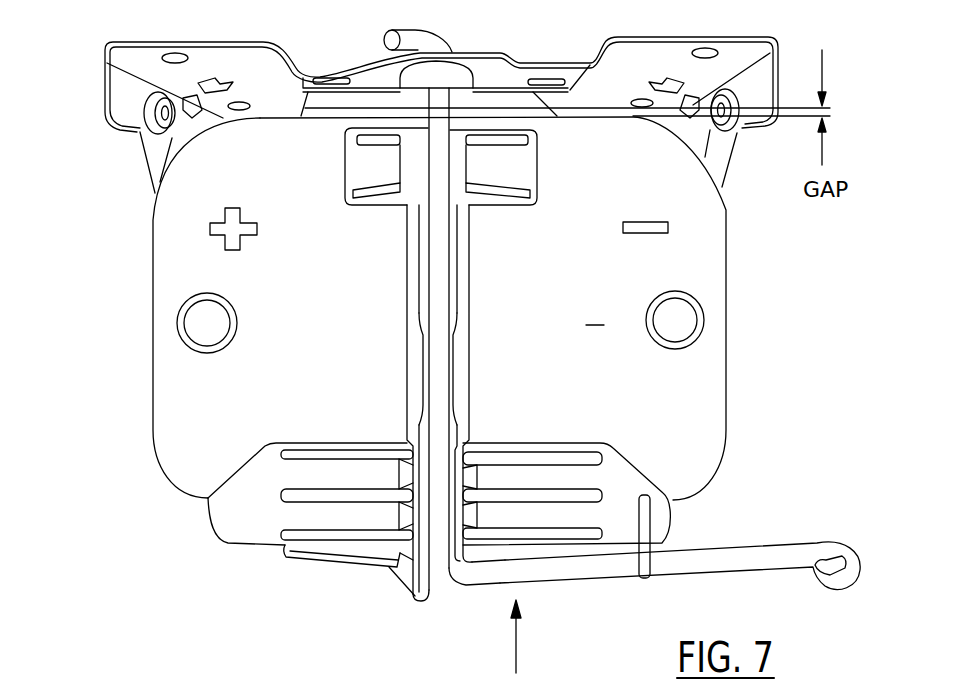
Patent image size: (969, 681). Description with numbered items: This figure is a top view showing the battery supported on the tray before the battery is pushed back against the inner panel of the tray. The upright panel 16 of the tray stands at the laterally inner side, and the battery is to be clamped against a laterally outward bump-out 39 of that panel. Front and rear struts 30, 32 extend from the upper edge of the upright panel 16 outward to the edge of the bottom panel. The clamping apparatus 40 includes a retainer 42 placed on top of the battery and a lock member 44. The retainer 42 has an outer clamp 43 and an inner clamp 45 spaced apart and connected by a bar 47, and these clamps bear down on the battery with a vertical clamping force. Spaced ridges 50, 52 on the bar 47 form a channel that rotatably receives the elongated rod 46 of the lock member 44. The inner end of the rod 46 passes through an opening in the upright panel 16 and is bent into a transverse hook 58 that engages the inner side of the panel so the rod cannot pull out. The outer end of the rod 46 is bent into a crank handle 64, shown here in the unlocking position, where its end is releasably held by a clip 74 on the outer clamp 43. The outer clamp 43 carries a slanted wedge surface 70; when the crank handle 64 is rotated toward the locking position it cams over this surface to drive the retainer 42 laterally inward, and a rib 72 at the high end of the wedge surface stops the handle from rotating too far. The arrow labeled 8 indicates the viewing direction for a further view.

The upright panel 16 is at (514, 74).
The transverse hook 58 is at (390, 31).
The bump-out 39 is at (300, 167).
The inner clamp 45 is at (525, 165).
The front strut 30 is at (162, 158).
The rear strut 32 is at (725, 153).
The clamping apparatus 40 is at (378, 262).
The rod 46 is at (437, 227).
The bar 47 is at (410, 313).
The ridge 50 is at (417, 373).
The retainer 42 is at (500, 340).
The ridge 52 is at (467, 388).
The outer clamp 43 is at (222, 517).
The rib 72 is at (417, 595).
The lock member 44 is at (440, 607).
The wedge surface 70 is at (475, 557).
The section line 8 is at (516, 653).
The clip 74 is at (644, 578).
The crank handle 64 is at (740, 557).